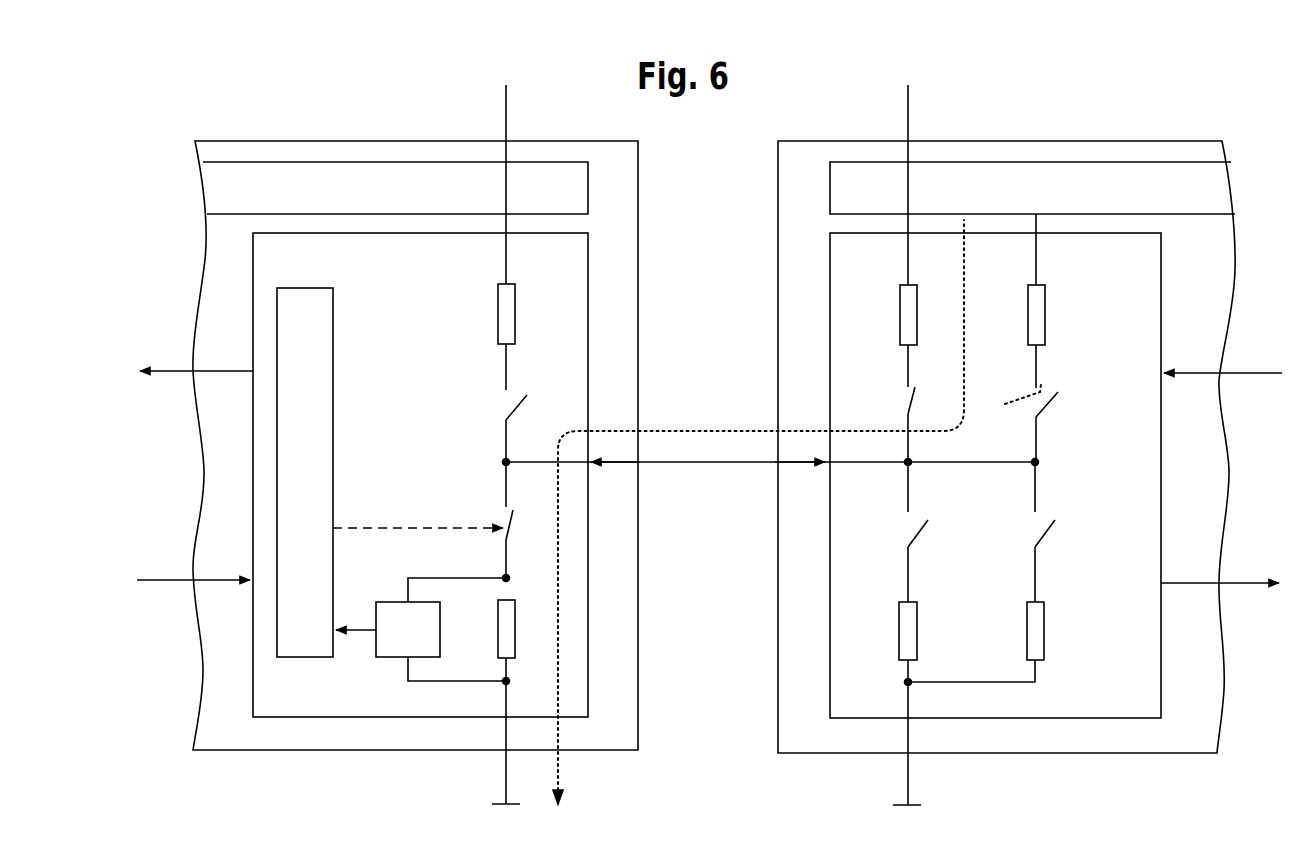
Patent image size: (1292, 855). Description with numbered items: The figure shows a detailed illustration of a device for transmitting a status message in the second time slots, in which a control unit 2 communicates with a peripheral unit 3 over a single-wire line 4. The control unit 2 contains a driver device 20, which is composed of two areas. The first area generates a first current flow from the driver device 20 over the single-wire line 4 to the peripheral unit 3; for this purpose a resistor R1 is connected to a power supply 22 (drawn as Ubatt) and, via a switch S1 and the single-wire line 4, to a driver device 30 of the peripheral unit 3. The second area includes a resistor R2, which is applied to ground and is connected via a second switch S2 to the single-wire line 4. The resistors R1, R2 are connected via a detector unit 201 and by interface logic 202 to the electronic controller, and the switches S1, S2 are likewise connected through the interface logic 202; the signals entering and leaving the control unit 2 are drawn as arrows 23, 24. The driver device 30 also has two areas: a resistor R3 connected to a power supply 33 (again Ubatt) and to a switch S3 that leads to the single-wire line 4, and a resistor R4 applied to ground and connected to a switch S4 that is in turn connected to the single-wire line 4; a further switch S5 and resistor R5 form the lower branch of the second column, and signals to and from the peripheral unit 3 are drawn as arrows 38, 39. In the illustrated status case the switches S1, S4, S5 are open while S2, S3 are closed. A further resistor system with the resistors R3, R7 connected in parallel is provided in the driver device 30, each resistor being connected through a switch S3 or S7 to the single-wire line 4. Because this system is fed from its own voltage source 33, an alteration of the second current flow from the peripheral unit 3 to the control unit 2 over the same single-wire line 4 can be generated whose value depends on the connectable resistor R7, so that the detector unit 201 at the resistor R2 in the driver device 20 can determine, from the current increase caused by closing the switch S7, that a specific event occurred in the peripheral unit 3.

The control unit 2 is at (242, 141).
The peripheral unit 3 is at (858, 141).
The single-wire line 4 is at (704, 464).
The driver device 20 is at (322, 273).
The power supply 22 is at (322, 204).
The output signal 23 is at (178, 370).
The input signal 24 is at (162, 580).
The driver device 30 is at (885, 271).
The power supply 33 is at (885, 201).
The input signal 38 is at (1266, 373).
The output signal 39 is at (1244, 583).
The detector unit 201 is at (428, 646).
The interface logic 202 is at (326, 335).
The resistor R1 is at (501, 315).
The resistor R2 is at (501, 627).
The resistor R3 is at (903, 315).
The resistor R4 is at (903, 627).
The resistor R5 is at (1031, 627).
The resistor R7 is at (1031, 315).
The switch S1 is at (513, 404).
The second switch S2 is at (503, 537).
The switch S3 is at (905, 403).
The switch S4 is at (912, 528).
The switch S5 is at (1040, 528).
The switch S7 is at (1042, 406).
The battery voltage Ubatt is at (472, 179).